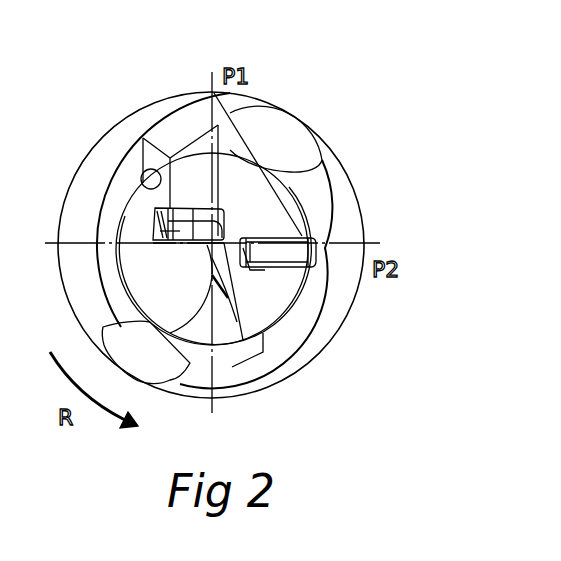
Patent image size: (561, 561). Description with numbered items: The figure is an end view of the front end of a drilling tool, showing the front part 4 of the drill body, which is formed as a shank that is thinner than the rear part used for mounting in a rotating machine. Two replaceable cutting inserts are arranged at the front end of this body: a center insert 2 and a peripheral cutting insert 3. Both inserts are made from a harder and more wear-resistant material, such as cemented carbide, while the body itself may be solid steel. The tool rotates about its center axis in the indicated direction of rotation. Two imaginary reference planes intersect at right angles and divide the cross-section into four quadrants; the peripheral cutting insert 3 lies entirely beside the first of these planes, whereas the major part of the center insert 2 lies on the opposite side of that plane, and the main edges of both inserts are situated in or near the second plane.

The center insert 2 is at (177, 252).
The peripheral cutting insert 3 is at (275, 231).
The front part 4 is at (128, 190).